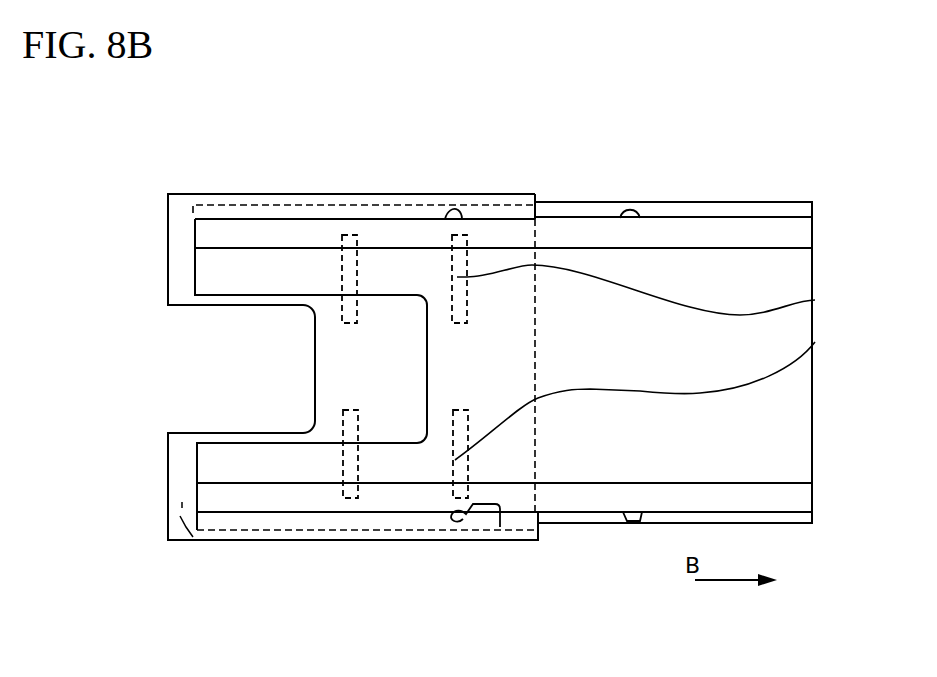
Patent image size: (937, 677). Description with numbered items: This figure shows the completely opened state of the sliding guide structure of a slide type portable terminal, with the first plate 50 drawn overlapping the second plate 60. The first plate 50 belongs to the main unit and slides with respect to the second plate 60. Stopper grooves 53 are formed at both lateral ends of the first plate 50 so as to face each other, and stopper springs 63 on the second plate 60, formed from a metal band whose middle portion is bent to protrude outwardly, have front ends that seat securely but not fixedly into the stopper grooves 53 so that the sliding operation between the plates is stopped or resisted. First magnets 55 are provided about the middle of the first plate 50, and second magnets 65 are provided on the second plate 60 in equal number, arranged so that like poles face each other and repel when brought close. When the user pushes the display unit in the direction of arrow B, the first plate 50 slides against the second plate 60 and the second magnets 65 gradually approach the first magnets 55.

The first plate 50 is at (193, 540).
The stopper grooves 53 is at (456, 210).
The first magnets 55 is at (343, 273).
The second plate 60 is at (763, 453).
The stopper springs 63 is at (640, 215).
The second magnets 65 is at (815, 300).